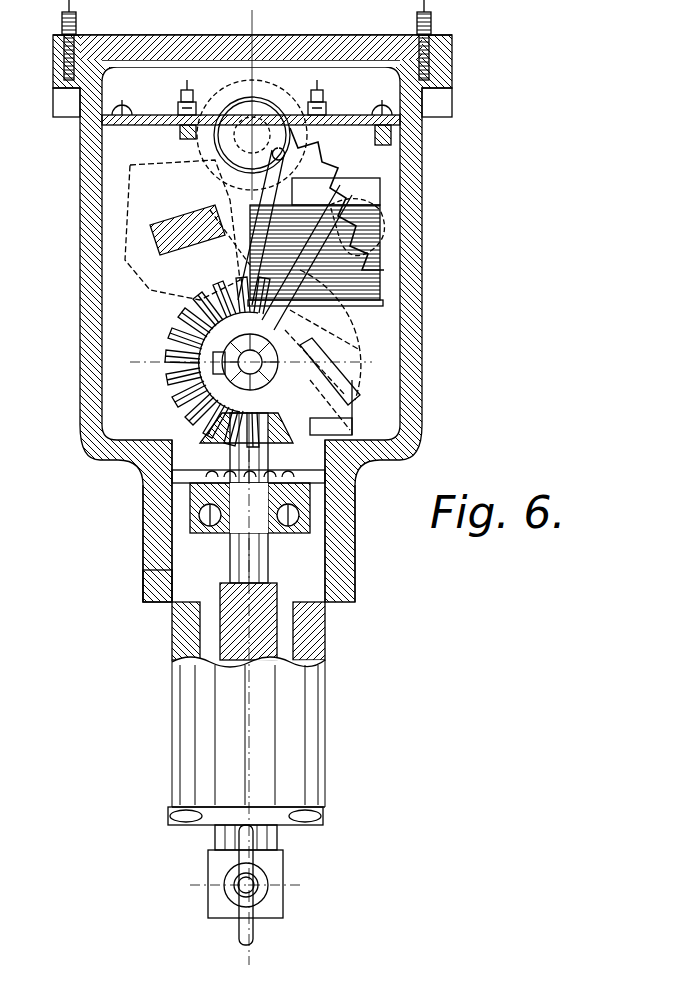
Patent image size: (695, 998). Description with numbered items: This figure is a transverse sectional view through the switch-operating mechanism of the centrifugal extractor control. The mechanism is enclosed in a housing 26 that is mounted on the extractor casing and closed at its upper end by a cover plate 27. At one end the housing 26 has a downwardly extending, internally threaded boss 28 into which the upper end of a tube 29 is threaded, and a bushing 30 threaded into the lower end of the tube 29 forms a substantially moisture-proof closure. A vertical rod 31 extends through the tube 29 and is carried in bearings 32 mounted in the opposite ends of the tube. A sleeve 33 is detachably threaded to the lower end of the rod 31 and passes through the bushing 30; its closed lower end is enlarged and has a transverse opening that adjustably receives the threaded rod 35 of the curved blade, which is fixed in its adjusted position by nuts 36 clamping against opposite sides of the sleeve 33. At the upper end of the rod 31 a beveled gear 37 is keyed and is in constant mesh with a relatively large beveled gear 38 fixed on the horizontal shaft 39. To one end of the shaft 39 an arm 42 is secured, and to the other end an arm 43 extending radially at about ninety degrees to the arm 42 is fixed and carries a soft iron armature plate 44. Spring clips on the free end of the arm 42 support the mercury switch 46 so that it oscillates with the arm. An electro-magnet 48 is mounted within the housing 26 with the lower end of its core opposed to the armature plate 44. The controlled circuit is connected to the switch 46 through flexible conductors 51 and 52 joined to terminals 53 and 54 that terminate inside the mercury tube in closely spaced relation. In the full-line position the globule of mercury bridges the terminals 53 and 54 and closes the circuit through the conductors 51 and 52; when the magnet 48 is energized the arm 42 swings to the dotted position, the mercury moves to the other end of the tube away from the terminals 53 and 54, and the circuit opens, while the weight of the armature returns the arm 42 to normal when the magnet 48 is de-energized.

The housing 26 is at (97, 258).
The cover plate 27 is at (360, 50).
The boss 28 is at (160, 530).
The tube 29 is at (180, 632).
The bushing 30 is at (322, 812).
The rod 31 is at (236, 565).
The bearings 32 is at (312, 530).
The sleeve 33 is at (270, 840).
The threaded rod 35 is at (258, 884).
The nuts 36 is at (254, 933).
The beveled gear 37 is at (300, 421).
The large beveled gear 38 is at (205, 380).
The horizontal shaft 39 is at (318, 375).
The arm 42 is at (225, 270).
The arm 43 is at (350, 338).
The armature plate 44 is at (330, 380).
The mercury switch 46 is at (300, 170).
The electro-magnet 48 is at (382, 265).
The flexible conductor 51 is at (238, 145).
The flexible conductor 52 is at (347, 128).
The terminal 53 is at (210, 230).
The terminal 54 is at (240, 200).